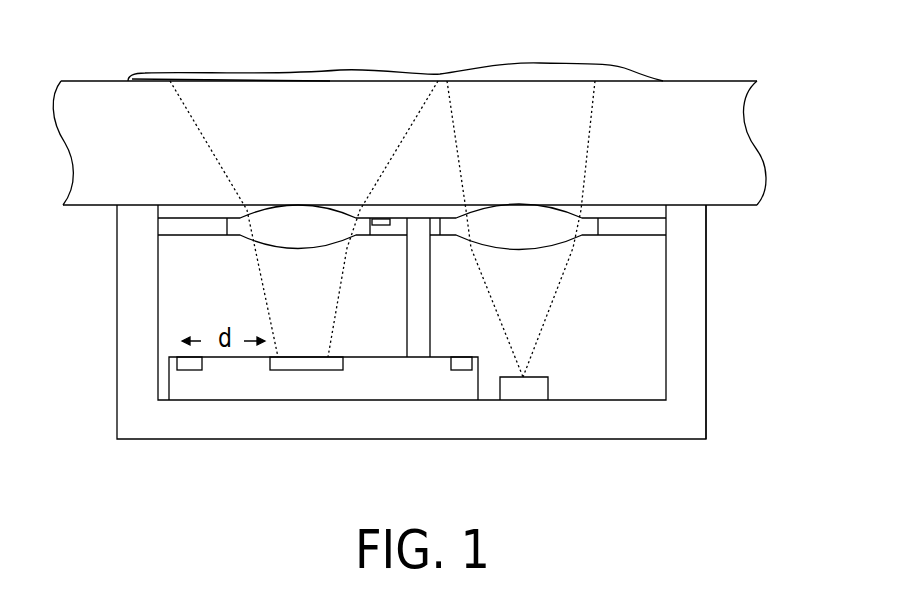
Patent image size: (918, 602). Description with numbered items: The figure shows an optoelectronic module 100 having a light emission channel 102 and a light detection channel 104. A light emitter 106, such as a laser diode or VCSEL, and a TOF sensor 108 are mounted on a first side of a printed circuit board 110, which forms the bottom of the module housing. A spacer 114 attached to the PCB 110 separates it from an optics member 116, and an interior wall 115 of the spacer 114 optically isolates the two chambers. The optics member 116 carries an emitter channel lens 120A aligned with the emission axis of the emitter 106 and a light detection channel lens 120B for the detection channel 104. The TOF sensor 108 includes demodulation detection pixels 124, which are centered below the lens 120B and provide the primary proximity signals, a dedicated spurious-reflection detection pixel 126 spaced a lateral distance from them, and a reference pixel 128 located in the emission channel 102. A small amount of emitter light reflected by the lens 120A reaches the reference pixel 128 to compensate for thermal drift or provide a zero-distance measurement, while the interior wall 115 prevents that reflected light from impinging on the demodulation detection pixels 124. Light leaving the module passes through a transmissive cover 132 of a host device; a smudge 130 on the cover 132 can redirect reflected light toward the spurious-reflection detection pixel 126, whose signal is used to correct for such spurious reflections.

The optoelectronic module 100 is at (808, 241).
The light emission channel 102 is at (640, 379).
The light detection channel 104 is at (245, 313).
The light emitter 106 is at (537, 393).
The TOF sensor 108 is at (370, 392).
The printed circuit board 110 is at (655, 441).
The spacer 114 is at (707, 388).
The interior wall 115 is at (406, 317).
The optics member 116 is at (642, 238).
The emitter channel lens 120A is at (535, 252).
The light detection channel lens 120B is at (266, 249).
The demodulation detection pixels 124 is at (302, 366).
The spurious reflection detection pixel 126 is at (192, 370).
The reference pixel 128 is at (462, 371).
The smudge 130 is at (155, 74).
The transmissive cover 132 is at (758, 157).